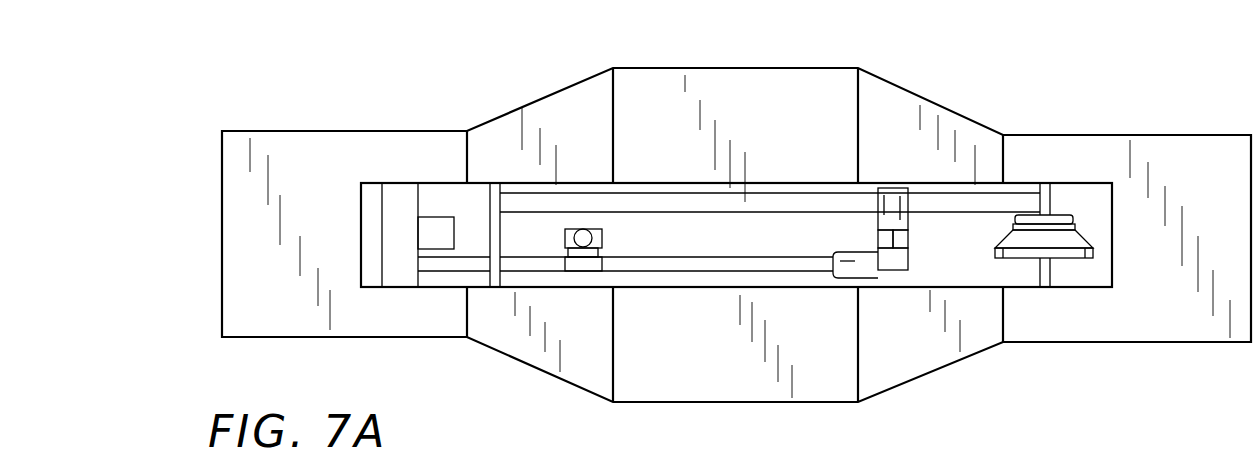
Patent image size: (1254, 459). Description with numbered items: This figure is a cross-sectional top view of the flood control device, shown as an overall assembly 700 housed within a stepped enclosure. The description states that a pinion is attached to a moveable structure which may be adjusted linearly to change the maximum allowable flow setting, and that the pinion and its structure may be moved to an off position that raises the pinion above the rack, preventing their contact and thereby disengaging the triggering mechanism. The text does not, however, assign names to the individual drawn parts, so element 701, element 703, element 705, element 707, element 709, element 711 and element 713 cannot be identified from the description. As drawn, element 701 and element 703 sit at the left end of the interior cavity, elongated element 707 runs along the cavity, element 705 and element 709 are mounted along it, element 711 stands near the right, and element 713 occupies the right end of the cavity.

The pick and place assembly 700 is at (232, 104).
The drive block 701 is at (393, 210).
The mounting plate 703 is at (475, 258).
The ball bearing carriage 705 is at (583, 229).
The guide rails 707 is at (700, 200).
The slide block 709 is at (868, 278).
The carriage 711 is at (893, 188).
The suction cup 713 is at (1058, 215).